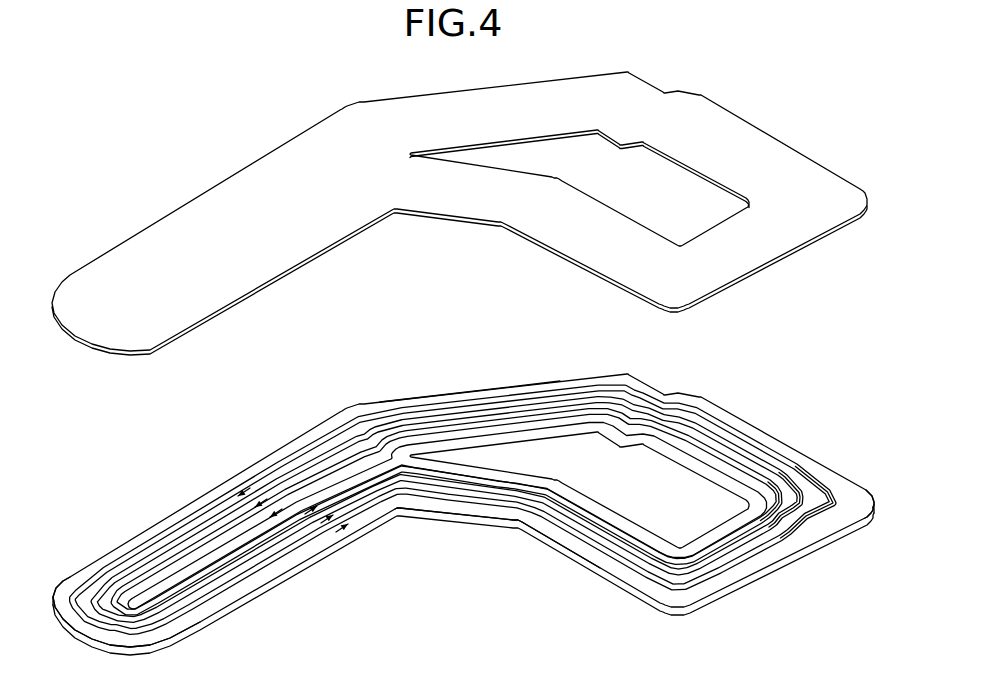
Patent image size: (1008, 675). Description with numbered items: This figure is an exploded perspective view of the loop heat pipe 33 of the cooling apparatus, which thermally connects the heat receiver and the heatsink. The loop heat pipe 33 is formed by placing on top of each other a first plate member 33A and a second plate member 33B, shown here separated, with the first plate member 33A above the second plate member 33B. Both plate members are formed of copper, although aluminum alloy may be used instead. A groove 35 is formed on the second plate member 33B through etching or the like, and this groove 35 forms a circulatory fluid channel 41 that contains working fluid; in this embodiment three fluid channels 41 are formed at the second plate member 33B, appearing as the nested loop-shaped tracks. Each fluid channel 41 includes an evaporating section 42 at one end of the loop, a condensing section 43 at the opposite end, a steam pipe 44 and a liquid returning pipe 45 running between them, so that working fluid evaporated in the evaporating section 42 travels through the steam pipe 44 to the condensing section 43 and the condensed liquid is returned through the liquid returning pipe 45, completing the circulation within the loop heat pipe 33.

The loop heat pipe 33 is at (459, 212).
The first plate member 33A is at (304, 152).
The second plate member 33B is at (293, 452).
The groove 35 is at (782, 497).
The fluid channel 41 is at (588, 417).
The evaporating section 42 is at (69, 561).
The condensing section 43 is at (851, 455).
The steam pipe 44 is at (473, 537).
The liquid returning pipe 45 is at (440, 374).